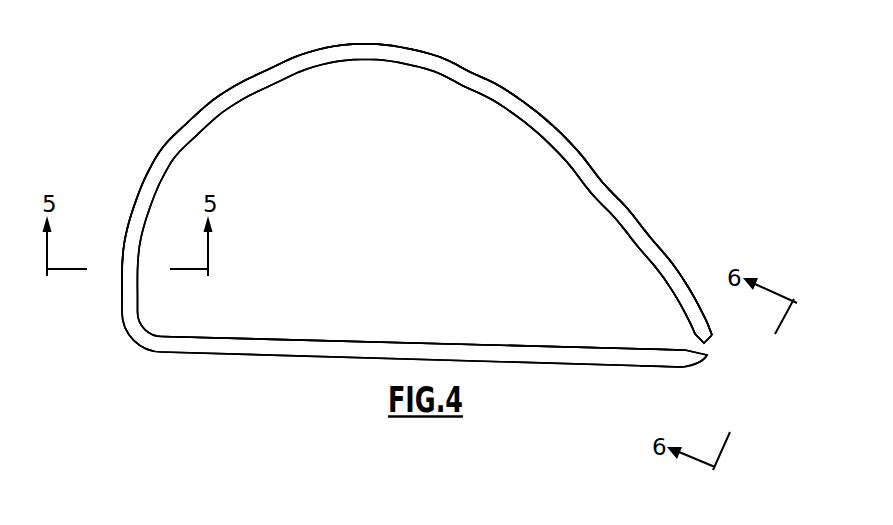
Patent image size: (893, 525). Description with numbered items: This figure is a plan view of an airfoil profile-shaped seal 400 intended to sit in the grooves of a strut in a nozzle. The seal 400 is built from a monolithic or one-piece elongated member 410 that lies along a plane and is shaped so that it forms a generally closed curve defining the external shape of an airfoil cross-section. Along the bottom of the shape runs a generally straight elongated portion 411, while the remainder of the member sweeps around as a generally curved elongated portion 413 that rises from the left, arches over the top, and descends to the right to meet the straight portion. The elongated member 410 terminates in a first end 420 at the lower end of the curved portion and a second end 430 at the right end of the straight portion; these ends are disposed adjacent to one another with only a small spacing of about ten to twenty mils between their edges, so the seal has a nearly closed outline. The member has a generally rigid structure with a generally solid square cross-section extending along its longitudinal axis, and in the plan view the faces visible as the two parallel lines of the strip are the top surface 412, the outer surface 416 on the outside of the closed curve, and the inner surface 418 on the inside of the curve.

The airfoil profile-shaped seal 400 is at (123, 114).
The elongated member 410 is at (499, 60).
The generally straight elongated portion 411 is at (444, 333).
The top surface 412 is at (260, 351).
The curved right portion of frame 413 is at (551, 111).
The outer surface 416 is at (261, 73).
The inner surface 418 is at (264, 89).
The first end 420 is at (690, 288).
The second end 430 is at (650, 367).